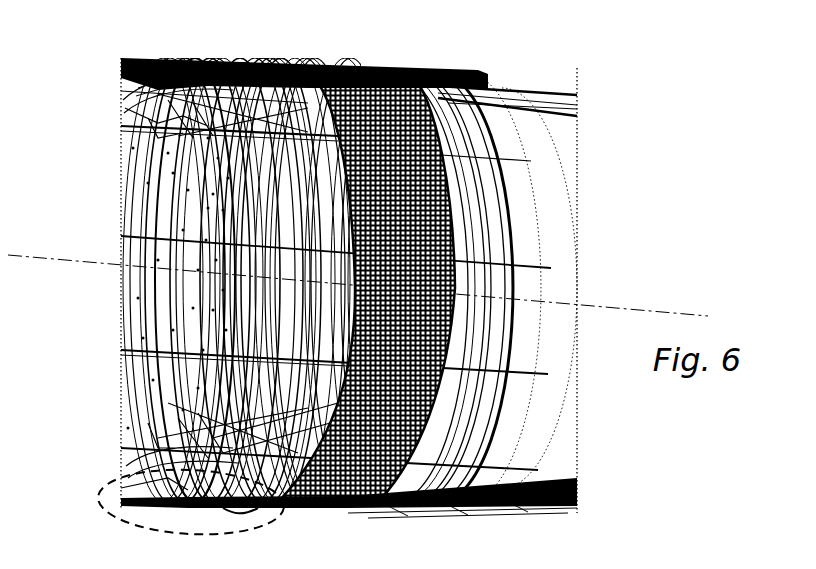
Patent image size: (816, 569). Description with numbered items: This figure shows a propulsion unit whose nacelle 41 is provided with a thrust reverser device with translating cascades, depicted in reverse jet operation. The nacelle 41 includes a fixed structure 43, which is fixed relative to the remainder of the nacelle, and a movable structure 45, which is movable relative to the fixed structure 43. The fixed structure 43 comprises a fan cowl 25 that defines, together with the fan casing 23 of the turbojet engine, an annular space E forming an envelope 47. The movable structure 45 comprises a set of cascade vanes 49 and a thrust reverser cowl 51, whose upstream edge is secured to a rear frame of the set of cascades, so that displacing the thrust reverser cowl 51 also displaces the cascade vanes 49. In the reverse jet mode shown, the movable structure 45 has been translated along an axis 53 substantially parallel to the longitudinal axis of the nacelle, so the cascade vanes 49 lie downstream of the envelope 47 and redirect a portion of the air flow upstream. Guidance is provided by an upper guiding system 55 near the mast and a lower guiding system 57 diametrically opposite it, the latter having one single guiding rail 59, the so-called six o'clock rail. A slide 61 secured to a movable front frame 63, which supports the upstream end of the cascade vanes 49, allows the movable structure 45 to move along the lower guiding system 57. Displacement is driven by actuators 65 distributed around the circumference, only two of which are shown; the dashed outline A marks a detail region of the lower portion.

The fan casing 23 is at (120, 104).
The fan cowl 25 is at (157, 217).
The nacelle 41 is at (461, 117).
The fixed structure 43 is at (148, 178).
The movable structure 45 is at (376, 62).
The envelope 47 is at (177, 56).
The cascade vanes 49 is at (322, 62).
The thrust reverser cowl 51 is at (528, 126).
The axis 53 is at (636, 302).
The upper guiding system 55 is at (291, 46).
The lower guiding system 57 is at (165, 494).
The guiding rail 59 is at (192, 500).
The slide 61 is at (237, 500).
The movable front frame 63 is at (232, 55).
The actuators 65 is at (247, 112).
The annular space E is at (165, 50).
The detail region A is at (250, 513).